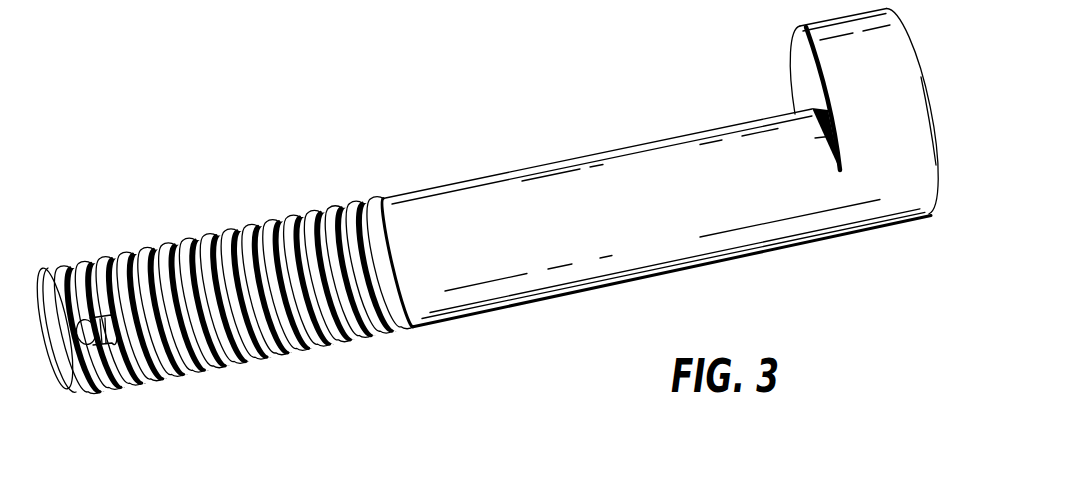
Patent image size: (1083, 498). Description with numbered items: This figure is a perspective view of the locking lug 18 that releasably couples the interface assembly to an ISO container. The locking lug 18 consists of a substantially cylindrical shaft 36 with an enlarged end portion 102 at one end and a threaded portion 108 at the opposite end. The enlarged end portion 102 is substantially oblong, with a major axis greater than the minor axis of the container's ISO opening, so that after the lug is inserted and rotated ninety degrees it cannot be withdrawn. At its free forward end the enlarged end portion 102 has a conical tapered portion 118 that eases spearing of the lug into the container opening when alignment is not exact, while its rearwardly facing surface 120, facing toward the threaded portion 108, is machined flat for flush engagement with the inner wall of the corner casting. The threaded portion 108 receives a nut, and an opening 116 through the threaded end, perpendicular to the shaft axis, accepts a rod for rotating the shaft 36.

The locking lug 18 is at (499, 200).
The cylindrical shaft 36 is at (419, 166).
The enlarged end portion 102 is at (844, 111).
The threaded portion 108 is at (220, 228).
The opening 116 is at (88, 282).
The conical tapered portion 118 is at (927, 98).
The rearwardly facing surface 120 is at (799, 78).